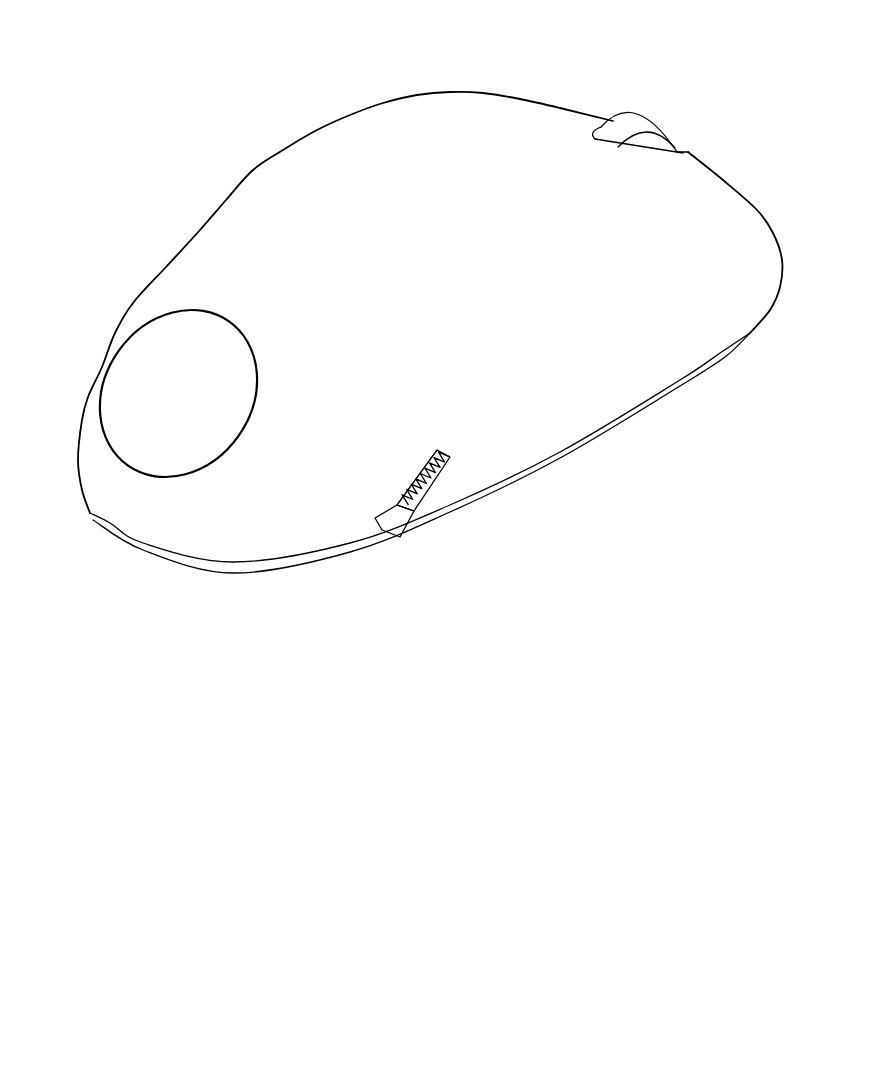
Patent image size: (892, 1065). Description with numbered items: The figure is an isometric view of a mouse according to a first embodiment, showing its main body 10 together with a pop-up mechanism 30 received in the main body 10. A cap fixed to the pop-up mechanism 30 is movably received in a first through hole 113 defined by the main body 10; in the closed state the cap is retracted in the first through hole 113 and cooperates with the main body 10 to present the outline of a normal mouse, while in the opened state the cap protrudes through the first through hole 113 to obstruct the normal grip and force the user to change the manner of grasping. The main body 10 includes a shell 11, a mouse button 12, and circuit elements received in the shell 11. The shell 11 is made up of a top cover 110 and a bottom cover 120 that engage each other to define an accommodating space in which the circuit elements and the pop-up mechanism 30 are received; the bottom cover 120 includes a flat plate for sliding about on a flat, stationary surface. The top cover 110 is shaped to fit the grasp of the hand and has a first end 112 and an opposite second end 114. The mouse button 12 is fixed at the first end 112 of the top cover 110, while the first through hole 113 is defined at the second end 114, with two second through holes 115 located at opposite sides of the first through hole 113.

The main body 10 is at (517, 93).
The shell 11 is at (430, 332).
The top cover 110 is at (667, 327).
The bottom cover 120 is at (627, 418).
The mouse button 12 is at (640, 123).
The first end 112 is at (660, 177).
The pop-up mechanism 30 is at (177, 357).
The first through hole 113 is at (192, 474).
The second end 114 is at (240, 463).
The second through holes 115 is at (450, 460).